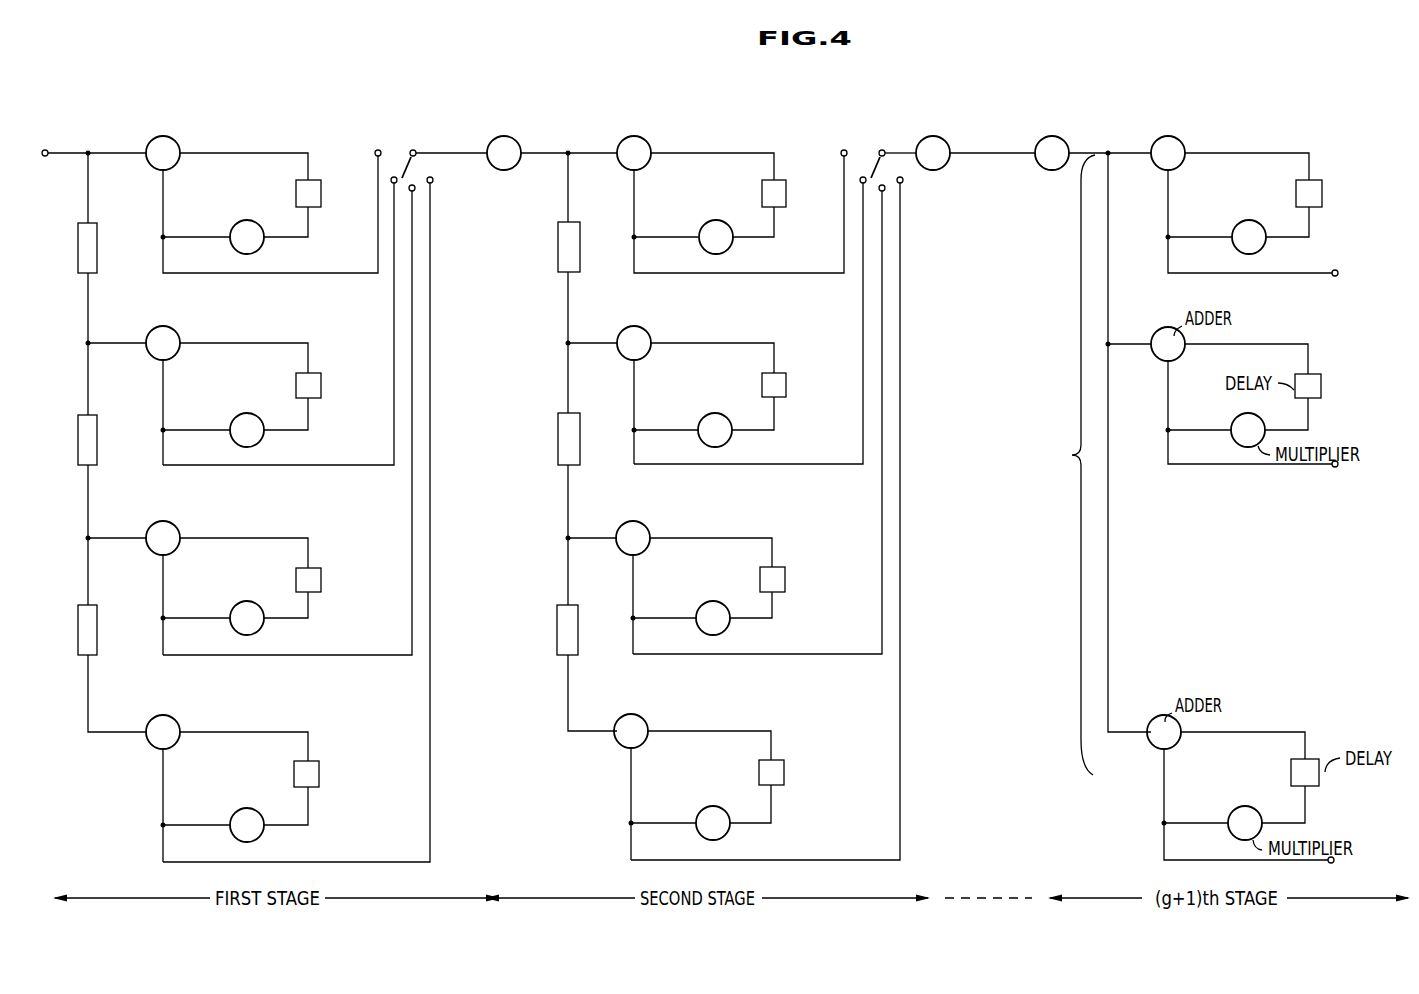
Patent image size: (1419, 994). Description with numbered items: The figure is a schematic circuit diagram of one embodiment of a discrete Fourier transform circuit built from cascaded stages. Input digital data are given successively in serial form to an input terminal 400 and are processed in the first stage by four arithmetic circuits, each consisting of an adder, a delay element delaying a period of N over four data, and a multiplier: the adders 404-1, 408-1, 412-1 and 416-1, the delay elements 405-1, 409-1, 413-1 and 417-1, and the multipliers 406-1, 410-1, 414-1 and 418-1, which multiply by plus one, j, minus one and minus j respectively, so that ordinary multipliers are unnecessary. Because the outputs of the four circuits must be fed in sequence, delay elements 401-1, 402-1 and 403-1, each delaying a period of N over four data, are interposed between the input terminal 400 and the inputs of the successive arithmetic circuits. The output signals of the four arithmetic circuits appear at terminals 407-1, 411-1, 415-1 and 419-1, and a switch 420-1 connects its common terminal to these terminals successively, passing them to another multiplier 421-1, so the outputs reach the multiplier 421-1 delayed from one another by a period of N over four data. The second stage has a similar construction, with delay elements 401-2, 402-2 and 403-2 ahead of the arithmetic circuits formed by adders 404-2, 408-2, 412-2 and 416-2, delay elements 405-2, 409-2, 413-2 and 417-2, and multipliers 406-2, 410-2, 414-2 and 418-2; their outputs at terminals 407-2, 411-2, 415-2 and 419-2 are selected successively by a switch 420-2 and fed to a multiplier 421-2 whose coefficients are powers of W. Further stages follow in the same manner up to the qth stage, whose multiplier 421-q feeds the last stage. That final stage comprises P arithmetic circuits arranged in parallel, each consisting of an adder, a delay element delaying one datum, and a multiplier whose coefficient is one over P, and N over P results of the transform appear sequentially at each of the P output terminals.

The input terminal 400 is at (46, 150).
The delay element 401-1 is at (98, 258).
The delay element 402-1 is at (98, 430).
The delay element 403-1 is at (98, 624).
The adder 404-1 is at (160, 138).
The N/4 data delay element 405-1 is at (294, 192).
The multiplier 406-1 is at (255, 254).
The terminal 407-1 is at (378, 149).
The adder 408-1 is at (160, 328).
The N/4 data delay element 409-1 is at (295, 385).
The multiplier 410-1 is at (256, 447).
The terminal 411-1 is at (394, 320).
The adder 412-1 is at (164, 523).
The N/4 data delay element 413-1 is at (322, 578).
The multiplier 414-1 is at (256, 632).
The terminal 415-1 is at (390, 658).
The adder 416-1 is at (160, 718).
The N/4 data delay element 417-1 is at (320, 774).
The multiplier 418-1 is at (264, 832).
The terminal 419-1 is at (430, 826).
The switch 420-1 is at (410, 150).
The multiplier 421-1 is at (498, 140).
The delay element 401-2 is at (557, 256).
The delay element 402-2 is at (557, 444).
The delay element 403-2 is at (556, 632).
The adder 404-2 is at (634, 138).
The delay element 405-2 is at (760, 198).
The multiplier 406-2 is at (727, 254).
The terminal 407-2 is at (768, 280).
The adder 408-2 is at (644, 328).
The delay element 409-2 is at (760, 390).
The multiplier 410-2 is at (727, 445).
The terminal 411-2 is at (748, 323).
The adder 412-2 is at (630, 523).
The delay element 413-2 is at (787, 582).
The multiplier 414-2 is at (727, 632).
The terminal 415-2 is at (757, 422).
The adder 416-2 is at (639, 718).
The delay element 417-2 is at (785, 772).
The multiplier 418-2 is at (728, 832).
The terminal 419-2 is at (901, 832).
The switch 420-2 is at (880, 150).
The multiplier 421-2 is at (926, 142).
The multiplier 421-q is at (1066, 168).
The number of parallel arithmetic circuits P is at (1072, 455).